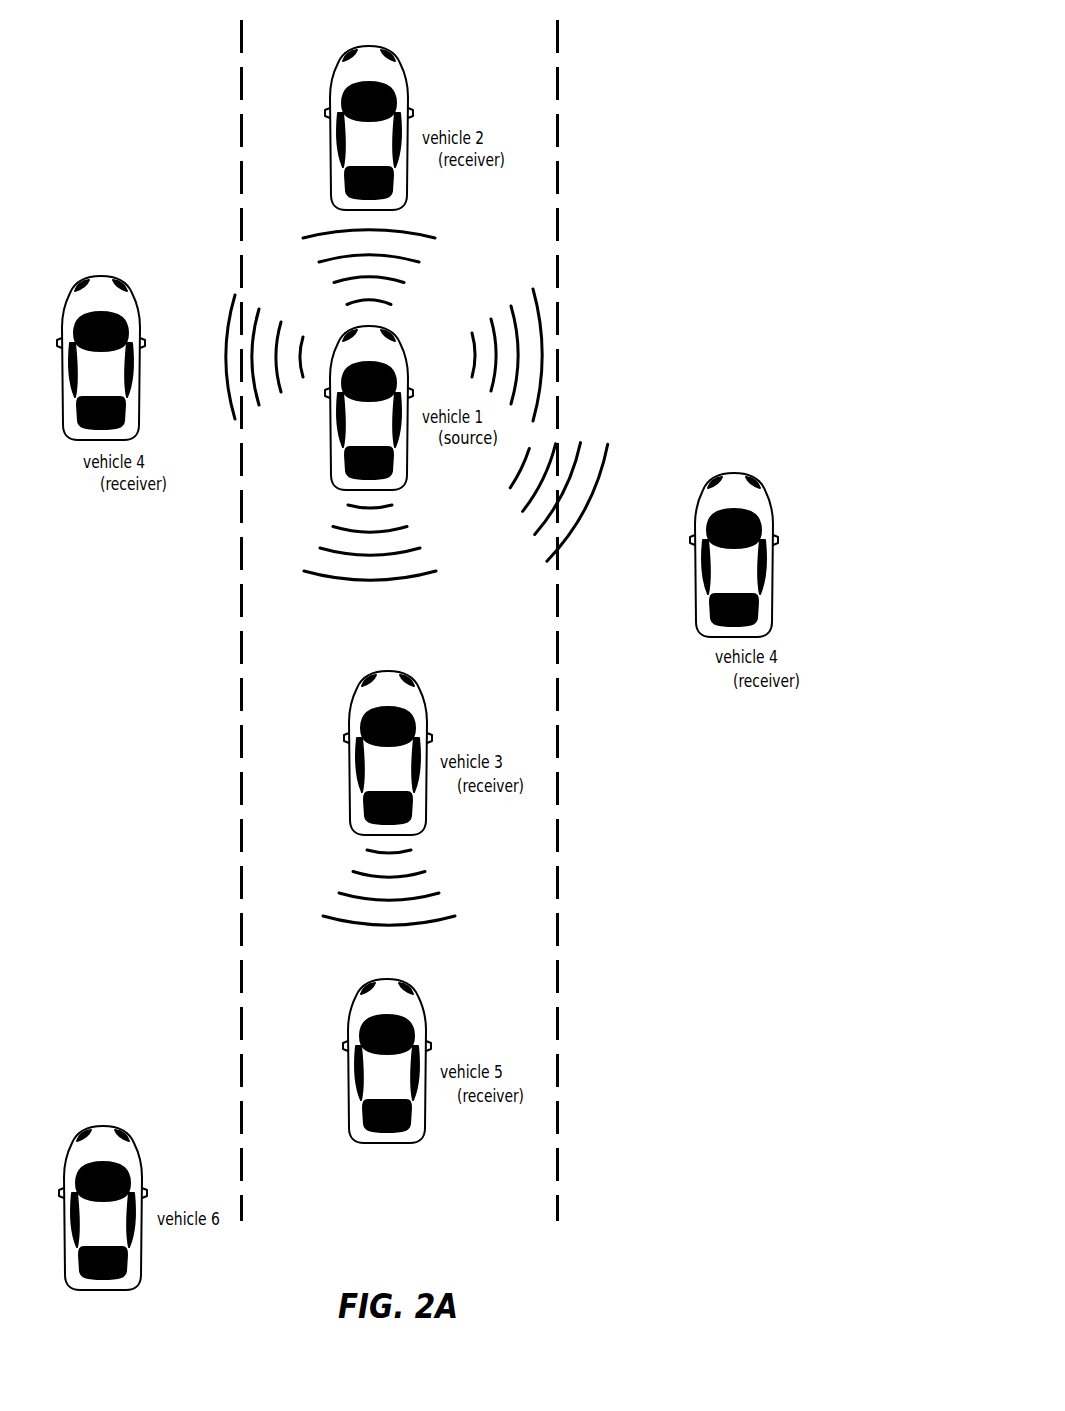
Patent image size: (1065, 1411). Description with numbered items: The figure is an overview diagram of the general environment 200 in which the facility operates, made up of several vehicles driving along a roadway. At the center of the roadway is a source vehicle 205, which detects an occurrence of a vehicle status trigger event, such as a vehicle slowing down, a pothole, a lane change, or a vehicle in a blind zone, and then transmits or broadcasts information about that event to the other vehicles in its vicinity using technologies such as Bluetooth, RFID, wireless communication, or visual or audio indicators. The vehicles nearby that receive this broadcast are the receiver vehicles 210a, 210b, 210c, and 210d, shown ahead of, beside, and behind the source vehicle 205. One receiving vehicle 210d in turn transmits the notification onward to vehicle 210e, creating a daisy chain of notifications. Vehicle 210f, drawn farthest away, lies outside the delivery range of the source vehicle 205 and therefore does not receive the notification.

The environment 200 is at (654, 73).
The source vehicle 205 is at (408, 352).
The receiver vehicle 210a is at (408, 75).
The receiver vehicle 210b is at (140, 305).
The receiver vehicle 210c is at (773, 498).
The receiver vehicle 210d is at (427, 697).
The vehicle 210e is at (426, 1005).
The vehicle 210f is at (142, 1152).